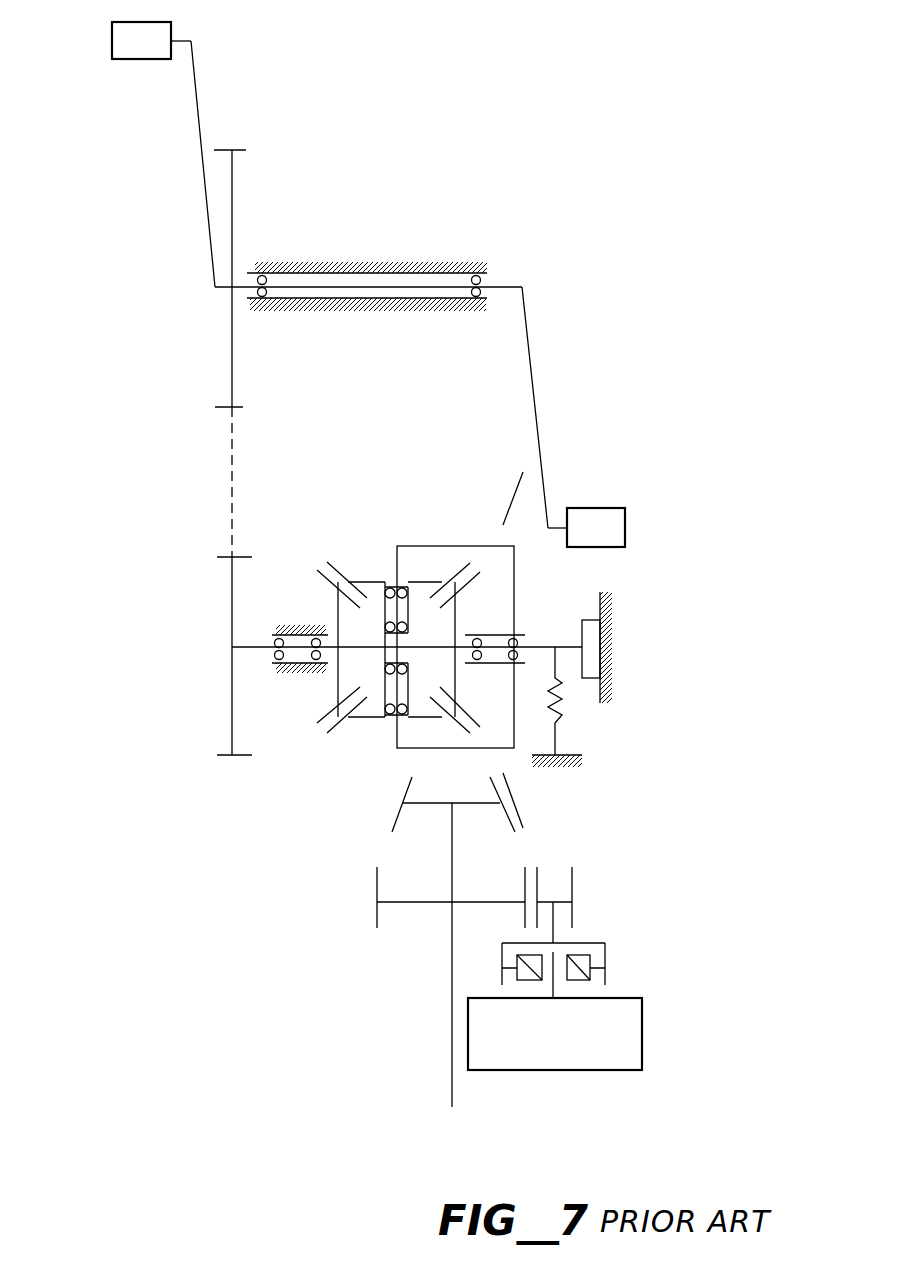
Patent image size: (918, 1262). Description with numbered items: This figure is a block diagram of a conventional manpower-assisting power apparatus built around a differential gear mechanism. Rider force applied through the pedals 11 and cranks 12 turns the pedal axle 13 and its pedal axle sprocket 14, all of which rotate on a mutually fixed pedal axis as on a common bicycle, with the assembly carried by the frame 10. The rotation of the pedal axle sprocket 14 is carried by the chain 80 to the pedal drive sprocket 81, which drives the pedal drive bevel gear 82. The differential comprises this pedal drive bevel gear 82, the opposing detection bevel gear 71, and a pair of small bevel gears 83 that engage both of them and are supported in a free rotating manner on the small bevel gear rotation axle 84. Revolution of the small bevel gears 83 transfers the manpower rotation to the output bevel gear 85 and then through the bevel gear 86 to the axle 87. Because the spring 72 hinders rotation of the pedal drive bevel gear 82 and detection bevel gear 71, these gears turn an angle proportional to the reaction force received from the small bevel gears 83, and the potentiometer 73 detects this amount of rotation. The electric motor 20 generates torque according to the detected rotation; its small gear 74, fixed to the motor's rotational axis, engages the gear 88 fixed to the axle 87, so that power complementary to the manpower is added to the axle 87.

The frame 10 is at (485, 280).
The pedals 11 is at (112, 40).
The cranks 12 is at (533, 357).
The pedal axle 13 is at (405, 290).
The pedal axle sprocket 14 is at (245, 150).
The electric motor 20 is at (627, 1028).
The detection bevel gear 71 is at (470, 568).
The spring 72 is at (560, 725).
The potentiometer 73 is at (590, 622).
The small gear 74 is at (572, 885).
The chain 80 is at (230, 490).
The pedal drive sprocket 81 is at (230, 556).
The pedal drive bevel gear 82 is at (320, 712).
The small bevel gears 83 is at (335, 565).
The small bevel gear rotation axle 84 is at (395, 560).
The output bevel gear 85 is at (513, 483).
The bevel gear 86 is at (390, 825).
The axle 87 is at (452, 953).
The gear 88 is at (377, 912).